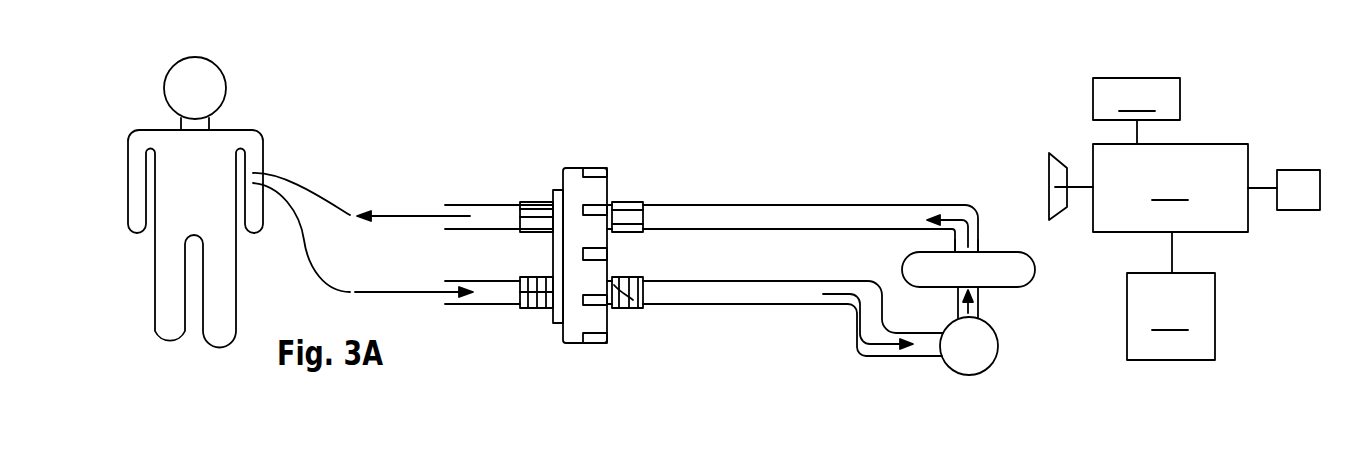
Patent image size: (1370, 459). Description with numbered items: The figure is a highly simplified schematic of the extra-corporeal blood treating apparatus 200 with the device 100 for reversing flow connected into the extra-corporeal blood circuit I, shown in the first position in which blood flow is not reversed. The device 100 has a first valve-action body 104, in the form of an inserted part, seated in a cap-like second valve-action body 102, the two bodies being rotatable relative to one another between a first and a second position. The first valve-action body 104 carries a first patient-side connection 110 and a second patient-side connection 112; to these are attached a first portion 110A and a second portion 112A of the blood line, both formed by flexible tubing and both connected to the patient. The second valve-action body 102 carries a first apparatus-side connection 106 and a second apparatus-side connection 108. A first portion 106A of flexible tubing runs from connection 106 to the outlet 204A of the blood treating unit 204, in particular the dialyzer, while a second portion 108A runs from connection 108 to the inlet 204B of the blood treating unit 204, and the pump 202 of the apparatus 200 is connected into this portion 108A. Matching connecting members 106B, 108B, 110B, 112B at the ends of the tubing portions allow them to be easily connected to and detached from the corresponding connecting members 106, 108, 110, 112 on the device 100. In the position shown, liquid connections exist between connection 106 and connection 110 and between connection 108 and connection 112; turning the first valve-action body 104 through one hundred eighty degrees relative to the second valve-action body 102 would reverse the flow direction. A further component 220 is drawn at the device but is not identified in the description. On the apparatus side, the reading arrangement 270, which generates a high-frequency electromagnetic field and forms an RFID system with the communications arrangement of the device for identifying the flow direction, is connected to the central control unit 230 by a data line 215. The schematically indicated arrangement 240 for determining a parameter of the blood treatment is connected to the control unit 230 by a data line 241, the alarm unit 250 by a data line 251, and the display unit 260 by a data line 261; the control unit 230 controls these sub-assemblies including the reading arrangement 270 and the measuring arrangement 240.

The device for reversing flow 100 is at (568, 241).
The second valve-action body 102 is at (608, 190).
The first valve-action body 104 is at (555, 190).
The first apparatus-side connection 106 is at (674, 178).
The first portion of the blood line 106A is at (780, 217).
The connecting member 106B is at (633, 210).
The second apparatus-side connection 108 is at (659, 339).
The second portion of the blood line 108A is at (767, 295).
The connecting member 108B is at (633, 300).
The first patient-side connection 110 is at (474, 164).
The first portion of the blood line 110A is at (497, 218).
The connecting member 110B is at (530, 200).
The second patient-side connection 112 is at (484, 345).
The second portion of the blood line 112A is at (487, 293).
The connecting member 112B is at (530, 307).
The sensor 220 is at (533, 203).
The extra-corporeal blood treating apparatus 200 is at (871, 271).
The pump 202 is at (970, 367).
The blood treating unit 204 is at (1000, 264).
The outlet of the blood treating unit 204A is at (982, 250).
The inlet of the blood treating unit 204B is at (987, 290).
The data line 215 is at (1172, 252).
The central control unit 230 is at (1170, 188).
The arrangement for determining a parameter of the blood treatment 240 is at (1136, 99).
The data line 241 is at (1137, 138).
The alarm unit 250 is at (1048, 183).
The data line 251 is at (1080, 185).
The display unit 260 is at (1298, 180).
The data line 261 is at (1263, 188).
The reading arrangement 270 is at (1171, 316).